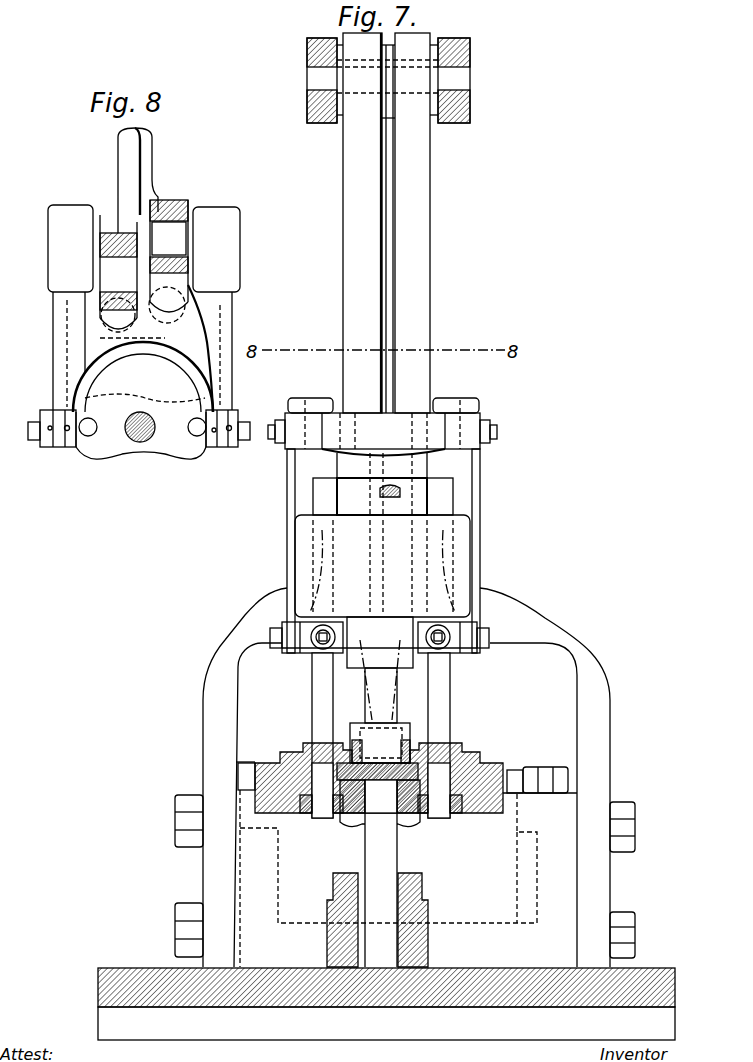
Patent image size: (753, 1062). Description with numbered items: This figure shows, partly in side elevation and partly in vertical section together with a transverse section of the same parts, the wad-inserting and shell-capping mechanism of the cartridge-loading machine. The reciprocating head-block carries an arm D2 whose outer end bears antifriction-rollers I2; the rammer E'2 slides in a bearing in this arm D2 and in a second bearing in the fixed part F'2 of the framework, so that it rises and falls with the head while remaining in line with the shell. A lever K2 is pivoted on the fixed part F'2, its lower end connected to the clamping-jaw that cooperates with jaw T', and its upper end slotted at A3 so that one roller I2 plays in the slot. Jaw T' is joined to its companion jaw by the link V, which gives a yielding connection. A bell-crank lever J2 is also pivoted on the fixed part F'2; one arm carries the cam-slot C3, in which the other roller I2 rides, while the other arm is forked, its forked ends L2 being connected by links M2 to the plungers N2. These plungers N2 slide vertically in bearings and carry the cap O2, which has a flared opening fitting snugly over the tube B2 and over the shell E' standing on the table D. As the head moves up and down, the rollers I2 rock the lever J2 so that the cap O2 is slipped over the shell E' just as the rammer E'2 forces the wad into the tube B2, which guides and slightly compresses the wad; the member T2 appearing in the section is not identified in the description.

In FIG. 7, the arm D2 is at (318, 123).
In FIG. 7, the lever K2 is at (343, 247).
In FIG. 8, the lever K2 is at (118, 175).
In FIG. 7, the antifriction-rollers I2 is at (386, 118).
In FIG. 7, the bell-crank lever J2 is at (420, 288).
In FIG. 8, the bell-crank lever J2 is at (172, 203).
In FIG. 7, the forked ends L2 is at (306, 413).
In FIG. 8, the forked ends L2 is at (78, 410).
In FIG. 7, the links M2 is at (290, 548).
In FIG. 8, the links M2 is at (52, 445).
In FIG. 7, the rammer E'2 is at (417, 484).
In FIG. 8, the rammer E'2 is at (138, 458).
In FIG. 7, the fixed part of the framework F'2 is at (408, 566).
In FIG. 7, the shell E' is at (401, 792).
In FIG. 7, the pistons N2 is at (312, 700).
In FIG. 8, the pistons N2 is at (88, 436).
In FIG. 7, the clamping-jaw T' is at (379, 796).
In FIG. 7, the link V is at (412, 742).
In FIG. 7, the cap O2 is at (415, 818).
In FIG. 7, the tube B2 is at (352, 848).
In FIG. 7, the table D is at (478, 985).
In FIG. 8, the slot C3 is at (170, 240).
In FIG. 8, the slot A3 is at (85, 295).
In FIG. 8, the crosshead pad T2 is at (168, 452).